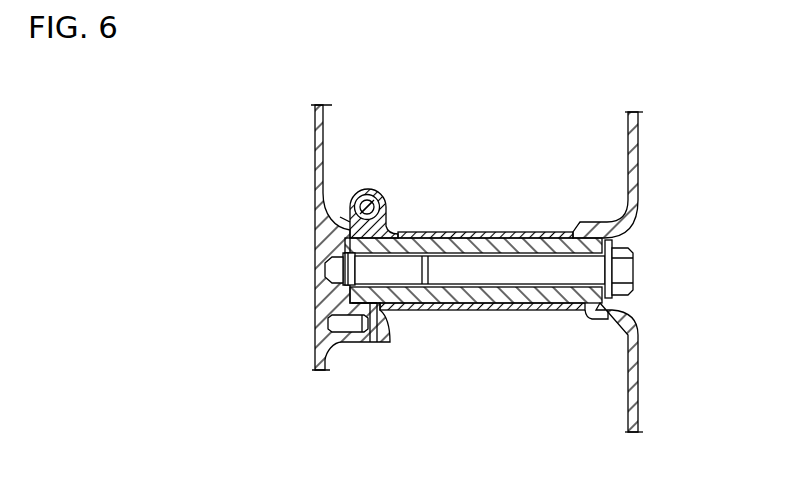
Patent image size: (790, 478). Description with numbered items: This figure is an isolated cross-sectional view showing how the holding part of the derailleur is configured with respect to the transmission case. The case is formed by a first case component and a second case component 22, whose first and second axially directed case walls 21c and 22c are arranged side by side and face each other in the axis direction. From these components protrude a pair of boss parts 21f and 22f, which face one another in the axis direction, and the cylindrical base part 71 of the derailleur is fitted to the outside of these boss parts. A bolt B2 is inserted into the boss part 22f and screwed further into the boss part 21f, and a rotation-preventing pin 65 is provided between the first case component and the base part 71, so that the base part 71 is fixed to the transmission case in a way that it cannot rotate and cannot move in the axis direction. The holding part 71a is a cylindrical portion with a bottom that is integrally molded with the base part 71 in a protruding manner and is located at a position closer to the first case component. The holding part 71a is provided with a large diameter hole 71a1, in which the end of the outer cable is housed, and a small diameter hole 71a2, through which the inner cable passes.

The base part 71 is at (456, 144).
The holding part 71a is at (406, 144).
The large diameter hole 71a1 is at (366, 196).
The small diameter hole 71a2 is at (372, 206).
The first axially directed case wall 21c is at (312, 172).
The boss part 21f is at (400, 290).
The second case component 22 is at (650, 272).
The second axially directed case wall 22c is at (638, 166).
The boss part 22f is at (525, 290).
The bolt B2 is at (622, 275).
The rotation-preventing pin 65 is at (343, 322).